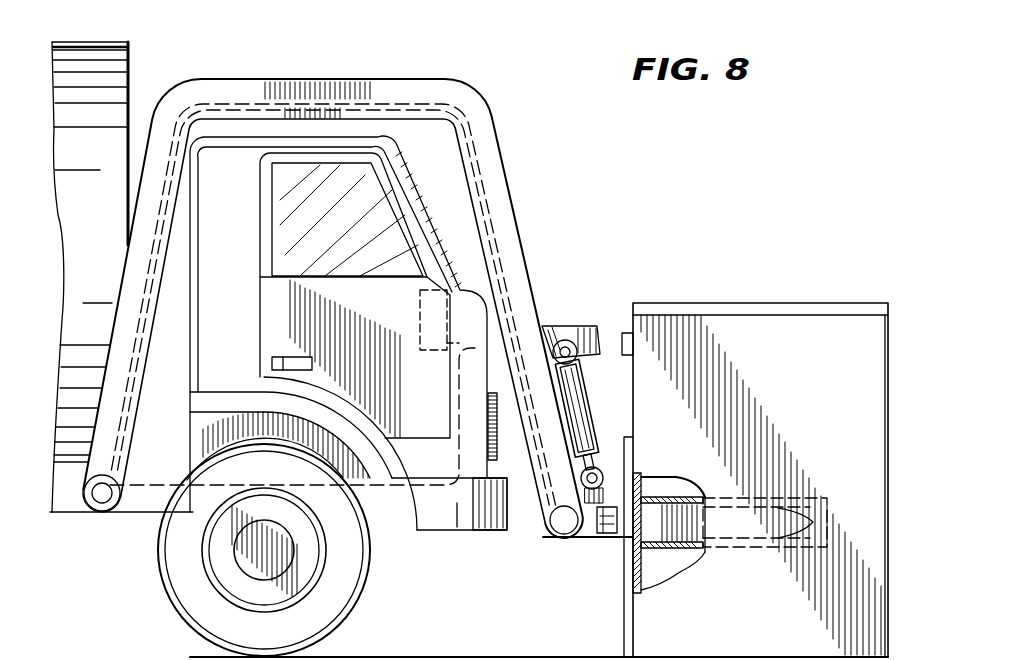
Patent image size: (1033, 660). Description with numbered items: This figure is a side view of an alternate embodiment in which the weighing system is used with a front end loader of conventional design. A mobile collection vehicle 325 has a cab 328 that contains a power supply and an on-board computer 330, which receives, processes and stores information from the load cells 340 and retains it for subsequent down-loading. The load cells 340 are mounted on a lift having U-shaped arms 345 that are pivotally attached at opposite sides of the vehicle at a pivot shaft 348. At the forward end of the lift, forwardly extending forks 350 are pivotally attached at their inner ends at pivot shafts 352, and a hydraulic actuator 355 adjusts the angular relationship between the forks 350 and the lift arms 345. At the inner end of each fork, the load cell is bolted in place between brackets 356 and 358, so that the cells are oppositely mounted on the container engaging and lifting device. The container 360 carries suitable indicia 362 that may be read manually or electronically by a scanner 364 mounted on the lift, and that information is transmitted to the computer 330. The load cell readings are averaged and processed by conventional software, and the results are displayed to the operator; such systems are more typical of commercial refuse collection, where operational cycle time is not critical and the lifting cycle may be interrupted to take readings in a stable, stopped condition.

The mobile collection vehicle 325 is at (206, 63).
The cab 328 is at (241, 247).
The on-board computer 330 is at (419, 308).
The load cells 340 is at (613, 540).
The U-shaped arms 345 is at (399, 88).
The pivot shaft 348 is at (102, 508).
The forks 350 is at (695, 498).
The pivot shafts 352 is at (556, 531).
The hydraulic actuator 355 is at (578, 385).
The bracket 356 is at (600, 486).
The bracket 358 is at (627, 565).
The container 360 is at (778, 304).
The indicia 362 is at (630, 350).
The scanner 364 is at (589, 332).